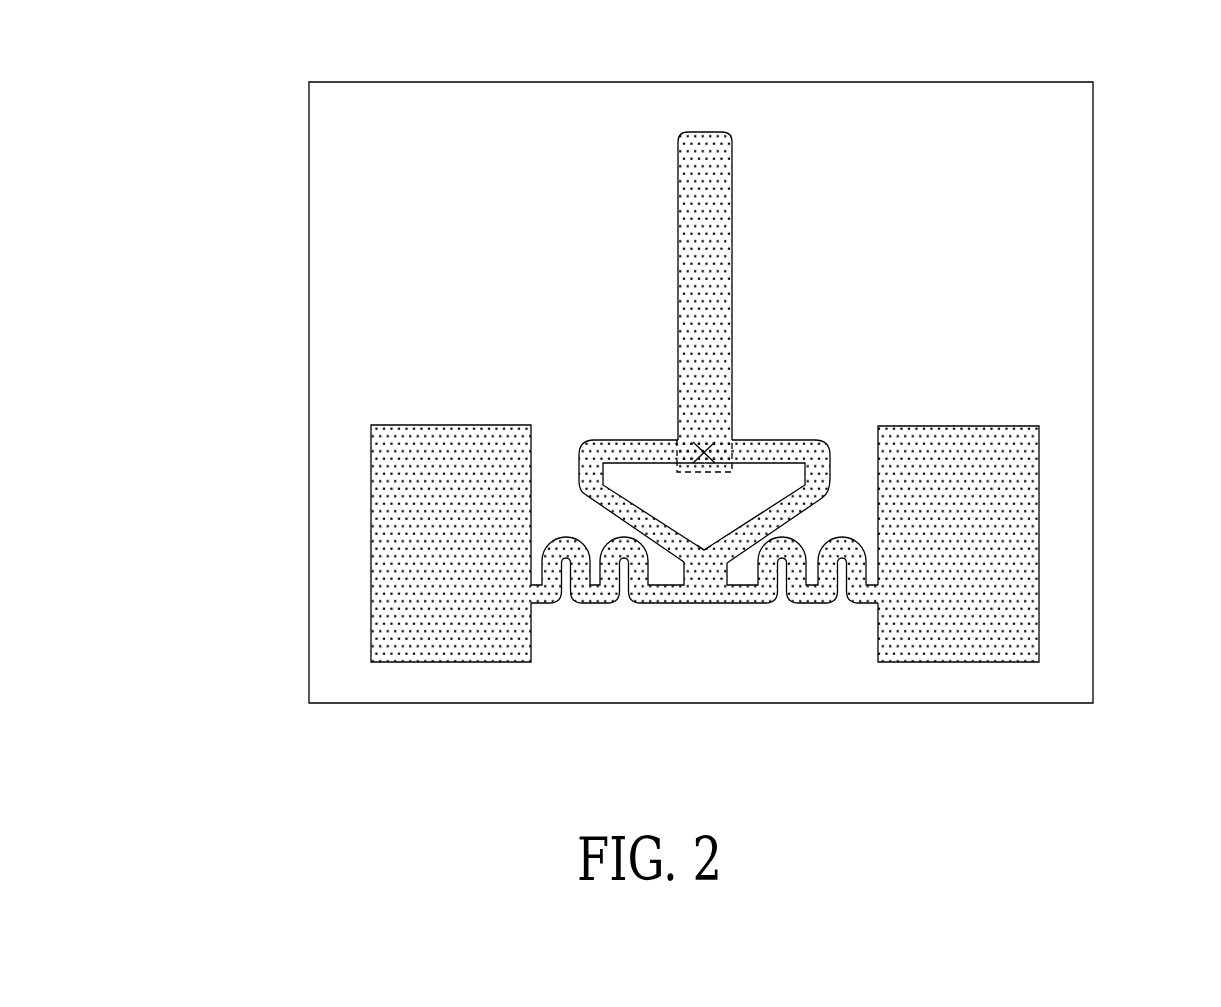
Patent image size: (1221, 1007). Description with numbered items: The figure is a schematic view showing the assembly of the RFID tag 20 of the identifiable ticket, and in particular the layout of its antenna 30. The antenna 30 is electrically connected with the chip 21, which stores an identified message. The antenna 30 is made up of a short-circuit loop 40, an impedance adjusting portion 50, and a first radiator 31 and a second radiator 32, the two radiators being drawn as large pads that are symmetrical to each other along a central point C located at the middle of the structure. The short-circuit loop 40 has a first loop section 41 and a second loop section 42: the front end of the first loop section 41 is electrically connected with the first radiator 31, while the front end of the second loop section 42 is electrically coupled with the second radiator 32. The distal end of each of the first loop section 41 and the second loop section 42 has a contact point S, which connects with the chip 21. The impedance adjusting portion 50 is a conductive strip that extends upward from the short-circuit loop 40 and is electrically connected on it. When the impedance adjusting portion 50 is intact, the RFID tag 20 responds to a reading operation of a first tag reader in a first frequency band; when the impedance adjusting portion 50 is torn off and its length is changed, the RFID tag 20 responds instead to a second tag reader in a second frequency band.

The RFID tag 20 is at (309, 228).
The chip 21 is at (698, 473).
The antenna 30 is at (1040, 554).
The first radiator 31 is at (993, 638).
The second radiator 32 is at (448, 632).
The short-circuit loop 40 is at (593, 517).
The first loop section 41 is at (810, 440).
The second loop section 42 is at (603, 443).
The impedance adjusting portion 50 is at (713, 163).
The central point C is at (704, 552).
The contact point S is at (712, 467).